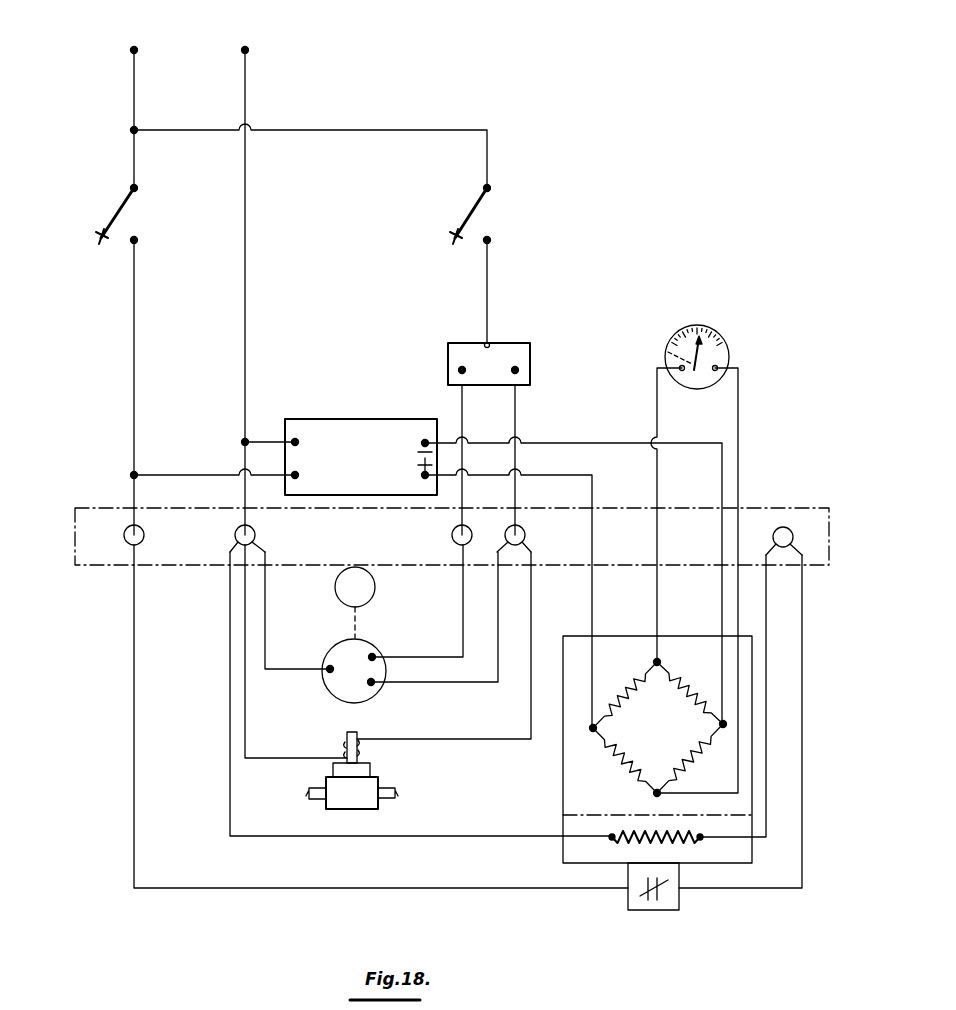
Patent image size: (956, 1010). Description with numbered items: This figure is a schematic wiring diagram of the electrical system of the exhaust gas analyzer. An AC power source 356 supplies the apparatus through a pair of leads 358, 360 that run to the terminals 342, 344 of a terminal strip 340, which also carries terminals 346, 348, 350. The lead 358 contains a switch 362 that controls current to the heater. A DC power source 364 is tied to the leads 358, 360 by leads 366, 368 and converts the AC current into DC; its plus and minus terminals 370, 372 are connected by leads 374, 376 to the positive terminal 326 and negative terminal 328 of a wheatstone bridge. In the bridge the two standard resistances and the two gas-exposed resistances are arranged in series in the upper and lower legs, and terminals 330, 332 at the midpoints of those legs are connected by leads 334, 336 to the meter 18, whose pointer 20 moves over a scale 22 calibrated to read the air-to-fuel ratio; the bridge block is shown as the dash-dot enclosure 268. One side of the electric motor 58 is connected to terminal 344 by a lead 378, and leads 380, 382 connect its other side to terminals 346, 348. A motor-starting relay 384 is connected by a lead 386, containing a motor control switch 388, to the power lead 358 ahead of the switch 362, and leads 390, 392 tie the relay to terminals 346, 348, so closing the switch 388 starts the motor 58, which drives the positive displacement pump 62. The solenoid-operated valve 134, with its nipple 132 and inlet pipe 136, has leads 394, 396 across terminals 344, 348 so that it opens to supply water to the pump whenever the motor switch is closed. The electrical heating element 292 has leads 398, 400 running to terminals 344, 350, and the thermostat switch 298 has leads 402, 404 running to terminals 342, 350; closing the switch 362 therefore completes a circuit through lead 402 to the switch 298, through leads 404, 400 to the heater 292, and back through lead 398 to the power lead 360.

The AC power source 356 is at (216, 55).
The lead 386 is at (378, 130).
The switch 362 is at (121, 214).
The motor control switch 388 is at (470, 206).
The lead 358 is at (135, 283).
The lead 360 is at (247, 292).
The motor-starting relay 384 is at (448, 345).
The DC power source 364 is at (355, 419).
The lead 368 is at (268, 440).
The minus terminal 372 is at (425, 443).
The plus terminal 370 is at (420, 472).
The lead 366 is at (162, 475).
The lead 390 is at (462, 420).
The lead 392 is at (515, 402).
The lead 376 is at (555, 443).
The lead 374 is at (548, 475).
The meter 18 is at (697, 325).
The pointer 20 is at (672, 348).
The scale 22 is at (722, 348).
The lead 336 is at (739, 403).
The lead 334 is at (657, 485).
The terminal strip 340 is at (790, 508).
The terminal 342 is at (145, 535).
The terminal 344 is at (258, 532).
The terminal 346 is at (452, 535).
The terminal 348 is at (525, 532).
The terminal 350 is at (773, 535).
The positive displacement pump 62 is at (375, 587).
The electric motor 58 is at (375, 655).
The lead 378 is at (266, 630).
The lead 380 is at (405, 657).
The lead 382 is at (393, 683).
The lead 394 is at (251, 710).
The lead 396 is at (447, 739).
The terminal 330 is at (660, 662).
The positive terminal 326 is at (596, 742).
The negative terminal 328 is at (718, 724).
The terminal 332 is at (657, 795).
The sensing bridge unit 268 is at (548, 790).
The pipe 136 is at (318, 793).
The nipple 132 is at (383, 800).
The solenoid-operated valve 134 is at (352, 806).
The lead 398 is at (467, 836).
The electrical heating element 292 is at (612, 842).
The thermostat switch 298 is at (625, 895).
The lead 400 is at (763, 840).
The lead 402 is at (340, 888).
The lead 404 is at (754, 888).